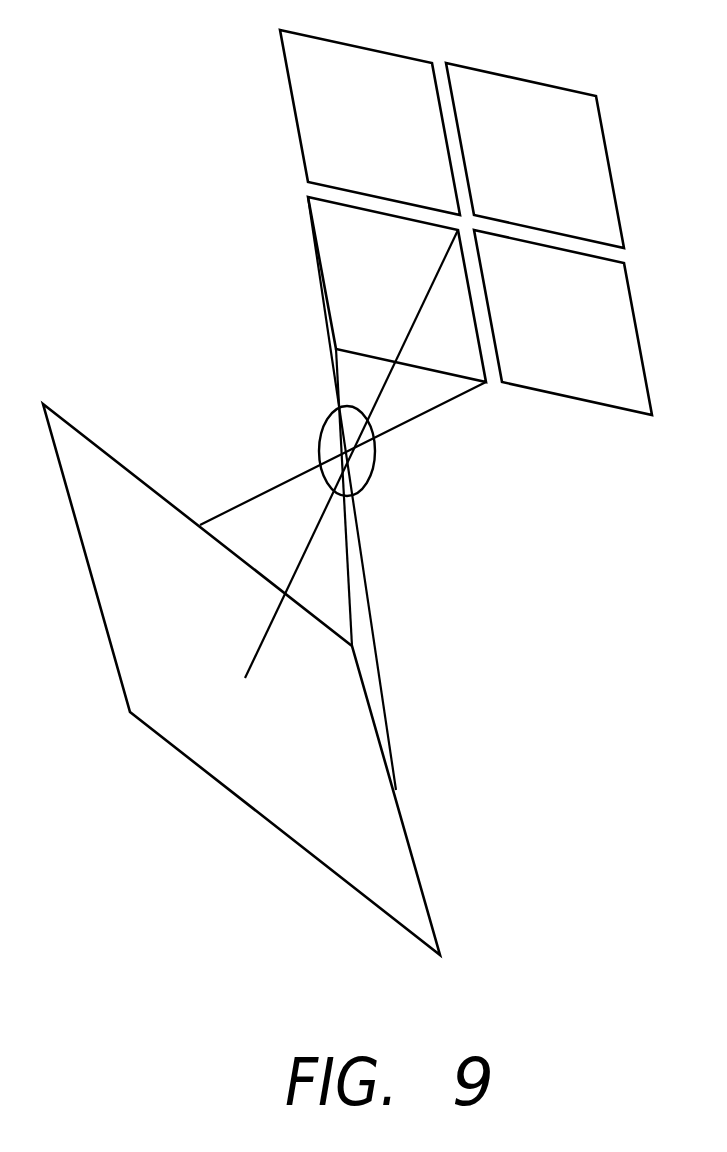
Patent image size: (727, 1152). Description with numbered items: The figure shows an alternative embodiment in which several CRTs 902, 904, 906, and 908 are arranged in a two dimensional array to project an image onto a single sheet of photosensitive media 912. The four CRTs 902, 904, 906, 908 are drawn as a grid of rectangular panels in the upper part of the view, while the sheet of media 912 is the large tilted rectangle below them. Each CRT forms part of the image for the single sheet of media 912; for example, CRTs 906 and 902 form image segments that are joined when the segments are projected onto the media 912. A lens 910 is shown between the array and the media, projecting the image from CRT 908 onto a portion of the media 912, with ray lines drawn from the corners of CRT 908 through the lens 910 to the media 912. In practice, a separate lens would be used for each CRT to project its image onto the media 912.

The CRT 902 is at (608, 167).
The CRT 904 is at (632, 309).
The CRT 906 is at (291, 85).
The CRT 908 is at (319, 251).
The lens 910 is at (378, 467).
The sheet of media 912 is at (414, 861).